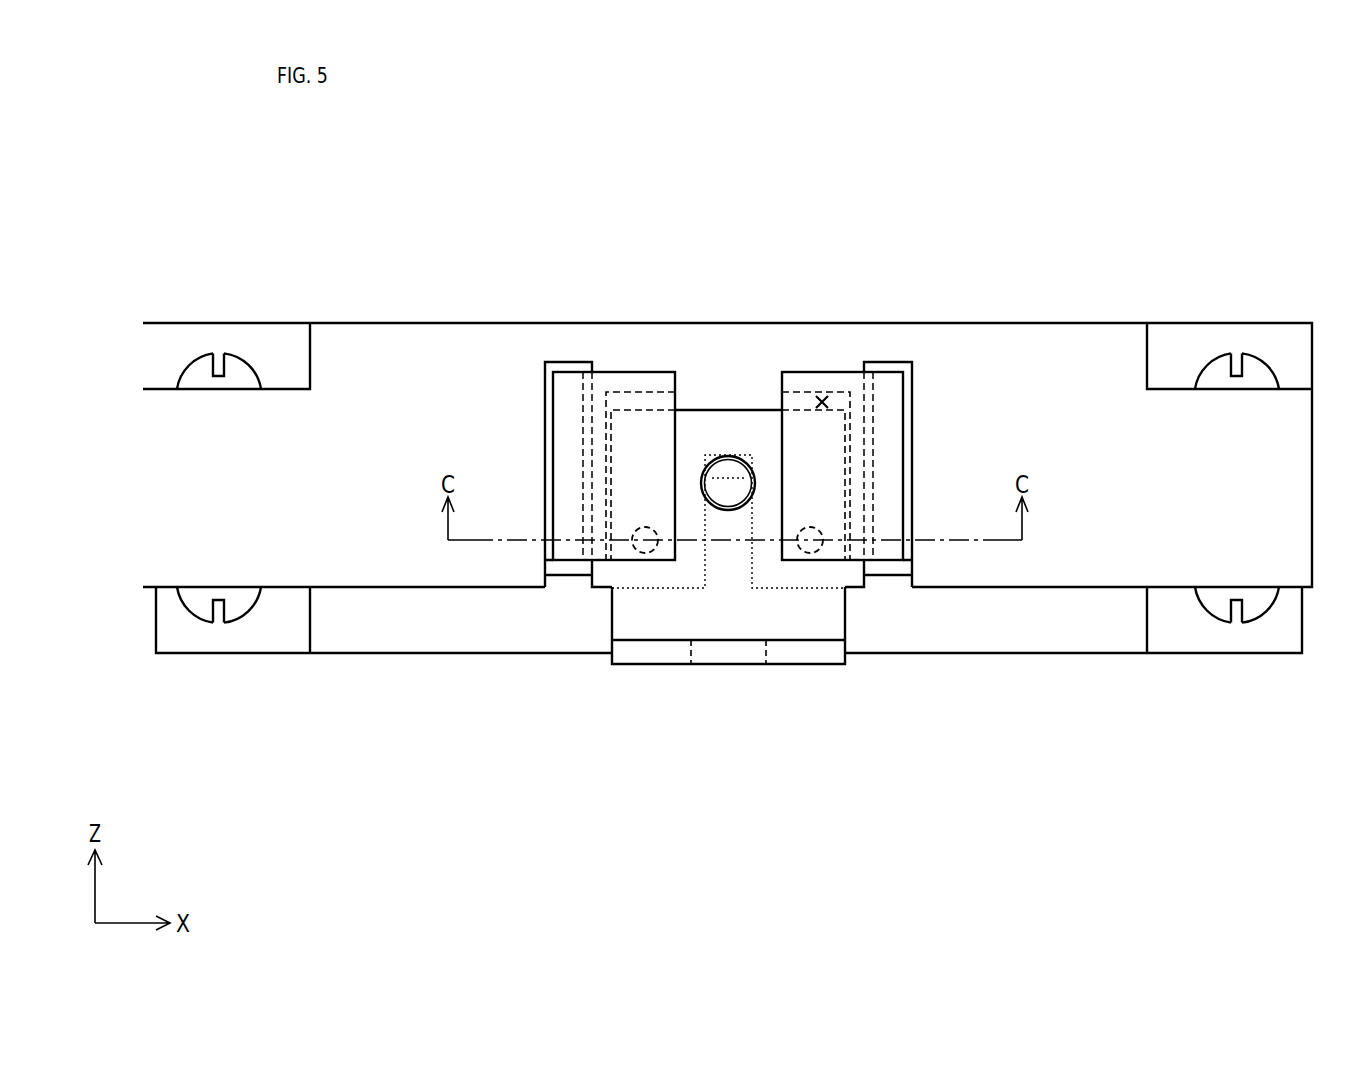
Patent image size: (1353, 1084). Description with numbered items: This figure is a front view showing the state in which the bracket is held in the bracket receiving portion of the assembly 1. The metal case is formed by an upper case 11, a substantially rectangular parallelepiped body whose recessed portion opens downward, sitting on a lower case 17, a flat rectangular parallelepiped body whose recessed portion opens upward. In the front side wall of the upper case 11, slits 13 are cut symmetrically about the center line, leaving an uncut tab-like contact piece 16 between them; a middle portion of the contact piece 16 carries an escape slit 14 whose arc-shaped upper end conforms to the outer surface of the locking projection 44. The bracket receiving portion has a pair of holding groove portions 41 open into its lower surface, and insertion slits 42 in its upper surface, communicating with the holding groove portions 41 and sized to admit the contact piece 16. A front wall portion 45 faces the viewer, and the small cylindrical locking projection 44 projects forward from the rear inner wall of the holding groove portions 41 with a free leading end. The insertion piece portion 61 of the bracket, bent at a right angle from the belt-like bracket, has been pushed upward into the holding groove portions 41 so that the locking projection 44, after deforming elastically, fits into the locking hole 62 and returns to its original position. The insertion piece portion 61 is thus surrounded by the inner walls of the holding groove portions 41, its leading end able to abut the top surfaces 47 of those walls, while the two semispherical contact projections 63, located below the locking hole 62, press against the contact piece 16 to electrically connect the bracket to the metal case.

The optical unit 1 is at (1023, 210).
The upper case 11 is at (353, 323).
The slits 13 is at (553, 412).
The escape slit 14 is at (757, 560).
The contact piece 16 is at (855, 573).
The lower case 17 is at (1038, 655).
The holding groove portions 41 is at (822, 400).
The insertion slits 42 is at (797, 393).
The locking projection 44 is at (727, 480).
The front wall portion 45 is at (639, 383).
The top surfaces 47 is at (642, 392).
The insertion piece portion 61 is at (658, 617).
The locking hole 62 is at (718, 498).
The contact projections 63 is at (645, 553).